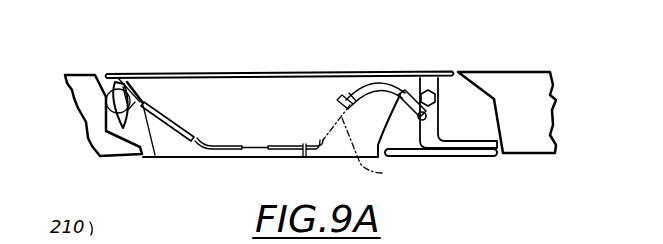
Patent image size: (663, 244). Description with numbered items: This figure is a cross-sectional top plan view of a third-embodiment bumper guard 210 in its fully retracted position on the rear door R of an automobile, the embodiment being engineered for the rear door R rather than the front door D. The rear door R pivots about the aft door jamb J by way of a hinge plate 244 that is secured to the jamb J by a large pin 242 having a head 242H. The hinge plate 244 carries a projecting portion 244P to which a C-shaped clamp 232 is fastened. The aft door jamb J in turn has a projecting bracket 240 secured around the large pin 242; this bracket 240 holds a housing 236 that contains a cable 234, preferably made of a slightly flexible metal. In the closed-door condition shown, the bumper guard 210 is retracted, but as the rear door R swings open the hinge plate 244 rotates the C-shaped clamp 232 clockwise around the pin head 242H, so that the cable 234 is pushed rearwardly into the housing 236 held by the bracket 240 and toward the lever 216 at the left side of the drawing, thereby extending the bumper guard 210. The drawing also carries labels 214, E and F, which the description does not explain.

The bumper guard 210 is at (87, 73).
The seal 214 is at (115, 90).
The lever 216 is at (145, 87).
The housing 236 is at (172, 131).
The projecting bracket 240 is at (412, 94).
The cable 234 is at (412, 112).
The large pin 242 is at (412, 103).
The C-shaped clamp 232 is at (428, 120).
The hinge plate 244 is at (459, 84).
The head of large pin 242H is at (439, 95).
The projecting portion of hinge plate 244P is at (441, 120).
The rear door R is at (282, 71).
The rail E is at (460, 70).
The frame body F is at (518, 70).
The front door D is at (563, 95).
The aft door jamb J is at (497, 136).